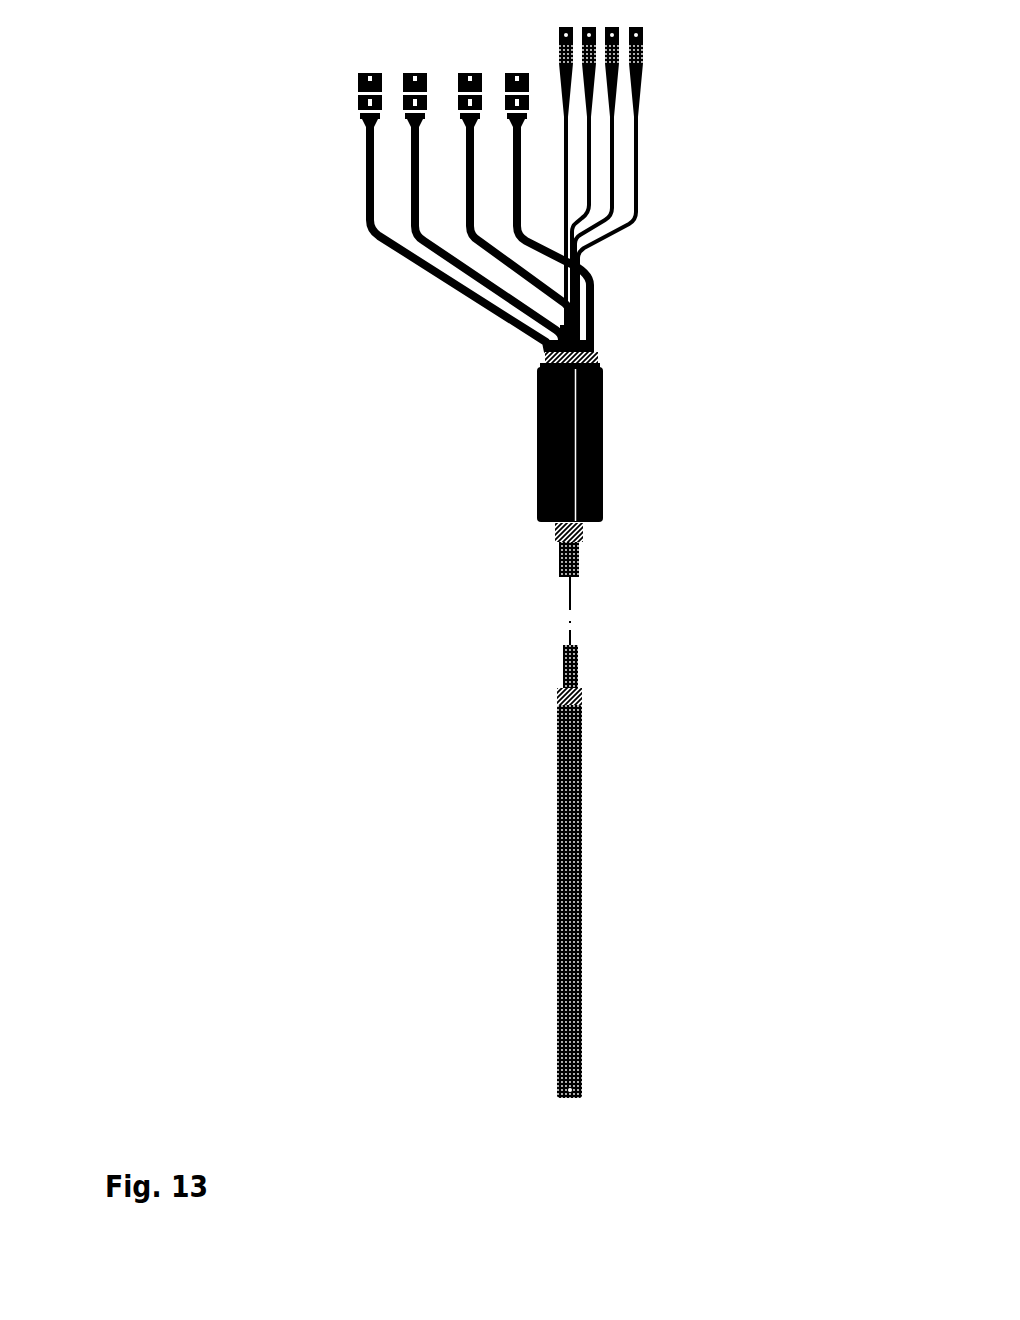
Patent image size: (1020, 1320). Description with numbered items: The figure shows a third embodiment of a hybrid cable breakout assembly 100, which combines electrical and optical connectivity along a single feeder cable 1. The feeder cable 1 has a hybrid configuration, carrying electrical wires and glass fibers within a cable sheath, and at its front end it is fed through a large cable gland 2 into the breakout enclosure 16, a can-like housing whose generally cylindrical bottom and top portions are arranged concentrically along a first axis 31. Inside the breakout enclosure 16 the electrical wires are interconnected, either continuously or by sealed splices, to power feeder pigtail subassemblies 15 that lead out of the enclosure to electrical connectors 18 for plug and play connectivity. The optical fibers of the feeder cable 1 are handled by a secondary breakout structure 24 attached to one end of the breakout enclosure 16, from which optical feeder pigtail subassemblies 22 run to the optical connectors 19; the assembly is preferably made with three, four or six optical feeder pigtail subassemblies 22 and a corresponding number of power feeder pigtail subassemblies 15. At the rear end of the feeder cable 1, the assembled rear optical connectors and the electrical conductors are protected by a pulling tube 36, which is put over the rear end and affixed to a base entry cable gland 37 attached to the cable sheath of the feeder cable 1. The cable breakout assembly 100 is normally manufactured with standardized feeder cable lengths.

The cable breakout assembly 100 is at (330, 412).
The electrical connectors 18 is at (330, 97).
The pigtail subassemblies 15 is at (339, 197).
The optical connectors 19 is at (663, 42).
The optical feeder pigtail subassemblies 22 is at (663, 144).
The secondary breakout structure 24 is at (543, 340).
The large cable gland 2 is at (522, 355).
The breakout enclosure 16 is at (517, 425).
The feeder cable 1 is at (568, 563).
The first axis 31 is at (568, 600).
The base entry cable gland 37 is at (558, 694).
The pulling tube 36 is at (551, 787).